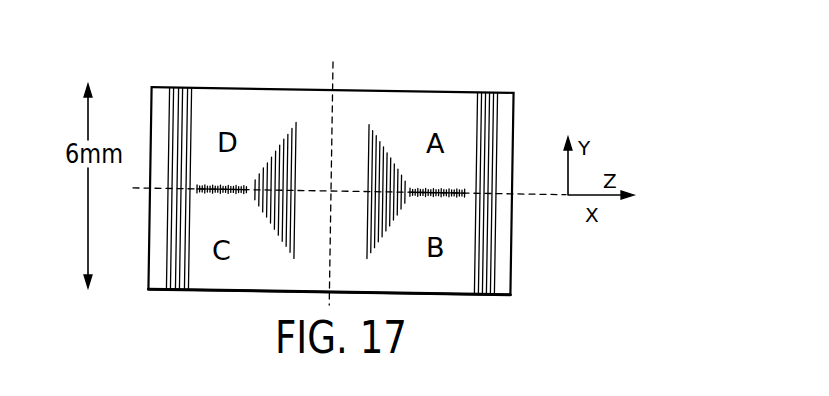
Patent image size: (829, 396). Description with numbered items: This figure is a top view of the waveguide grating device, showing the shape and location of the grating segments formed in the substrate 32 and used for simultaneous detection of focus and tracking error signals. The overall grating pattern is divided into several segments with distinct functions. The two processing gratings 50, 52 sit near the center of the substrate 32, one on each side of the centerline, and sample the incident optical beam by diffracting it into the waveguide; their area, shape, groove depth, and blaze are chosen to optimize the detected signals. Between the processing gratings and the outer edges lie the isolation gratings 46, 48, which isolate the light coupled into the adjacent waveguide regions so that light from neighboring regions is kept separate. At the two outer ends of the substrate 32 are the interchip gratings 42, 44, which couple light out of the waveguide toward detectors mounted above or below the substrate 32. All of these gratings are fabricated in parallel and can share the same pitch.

The substrate 32 is at (512, 270).
The interchip grating 42 is at (181, 87).
The interchip grating 44 is at (488, 90).
The isolation grating 46 is at (238, 189).
The isolation grating 48 is at (459, 190).
The processing grating 50 is at (285, 127).
The processing grating 52 is at (376, 127).